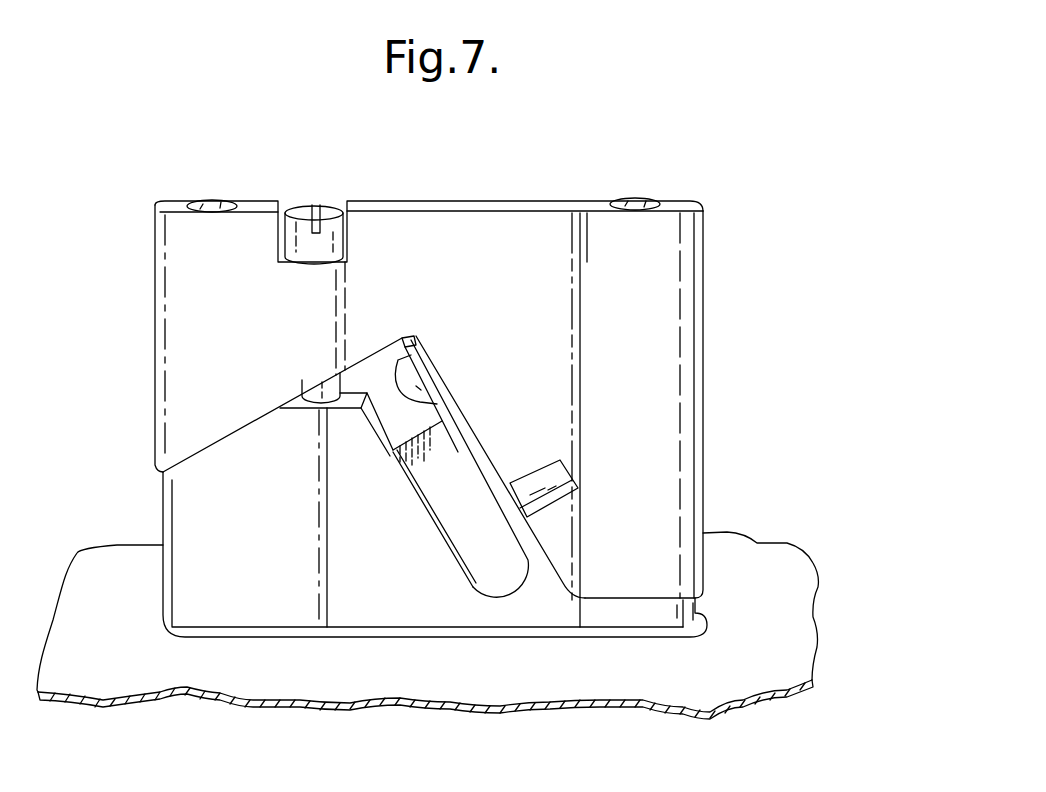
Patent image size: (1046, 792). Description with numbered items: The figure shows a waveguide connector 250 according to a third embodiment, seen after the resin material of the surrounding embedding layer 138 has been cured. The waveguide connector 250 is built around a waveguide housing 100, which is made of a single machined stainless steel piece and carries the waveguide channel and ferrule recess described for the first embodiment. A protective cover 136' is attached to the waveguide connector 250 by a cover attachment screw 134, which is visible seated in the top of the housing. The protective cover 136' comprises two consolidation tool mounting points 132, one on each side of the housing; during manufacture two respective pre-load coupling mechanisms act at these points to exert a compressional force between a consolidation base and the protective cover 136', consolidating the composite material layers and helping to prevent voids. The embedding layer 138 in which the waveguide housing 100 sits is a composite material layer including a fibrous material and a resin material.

The waveguide connector 250 is at (377, 378).
The waveguide housing 100 is at (270, 558).
The consolidation tool mounting points 132 is at (213, 204).
The cover attachment screw 134 is at (311, 205).
The protective cover 136' is at (489, 456).
The embedding layer 138 is at (803, 630).